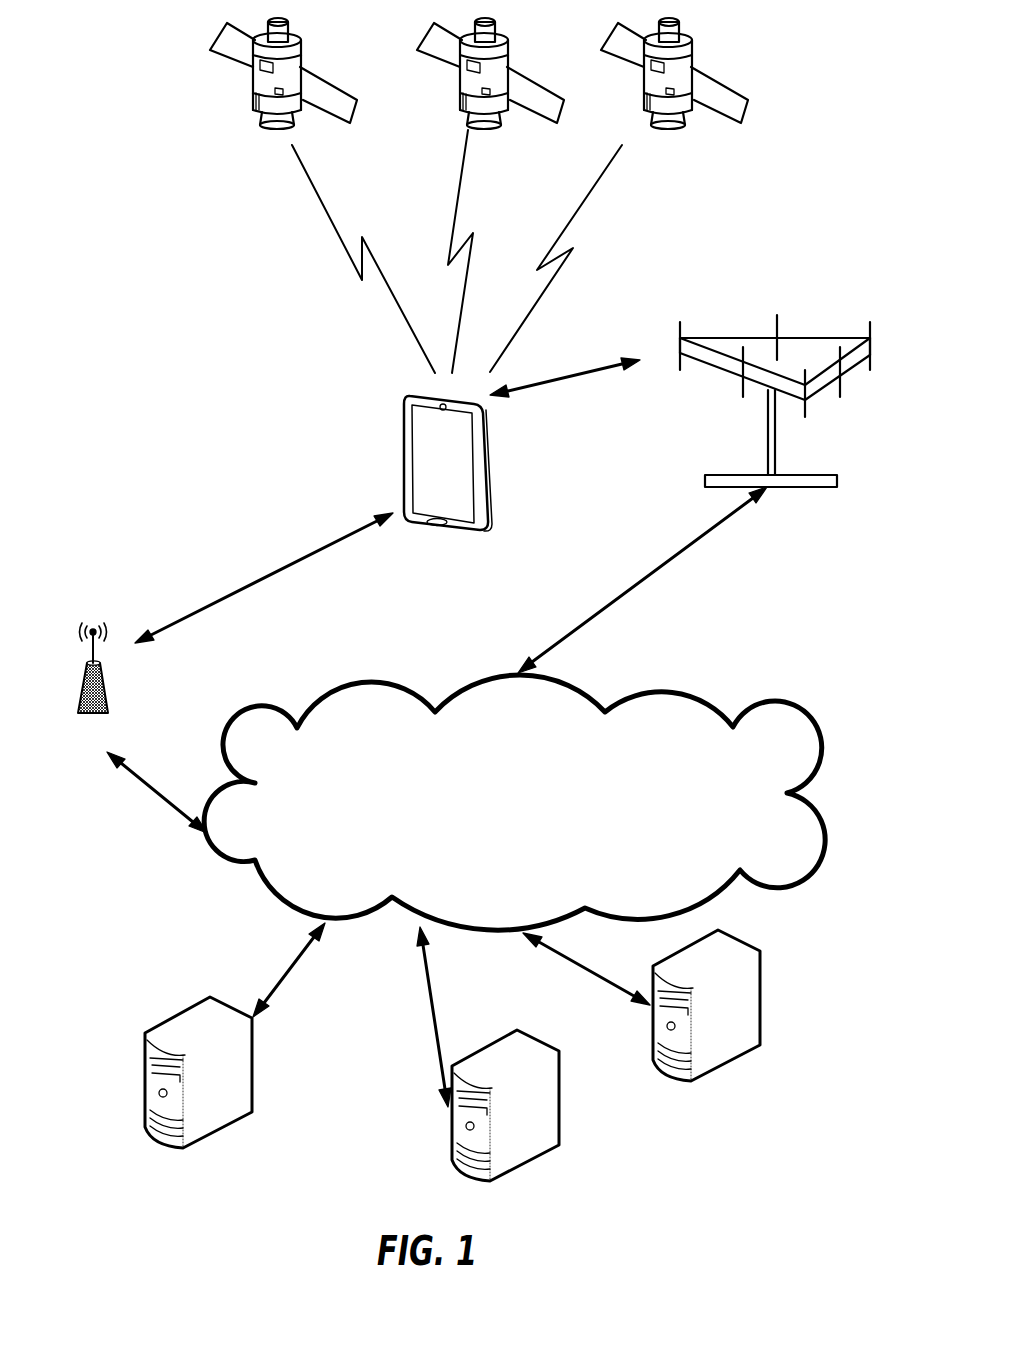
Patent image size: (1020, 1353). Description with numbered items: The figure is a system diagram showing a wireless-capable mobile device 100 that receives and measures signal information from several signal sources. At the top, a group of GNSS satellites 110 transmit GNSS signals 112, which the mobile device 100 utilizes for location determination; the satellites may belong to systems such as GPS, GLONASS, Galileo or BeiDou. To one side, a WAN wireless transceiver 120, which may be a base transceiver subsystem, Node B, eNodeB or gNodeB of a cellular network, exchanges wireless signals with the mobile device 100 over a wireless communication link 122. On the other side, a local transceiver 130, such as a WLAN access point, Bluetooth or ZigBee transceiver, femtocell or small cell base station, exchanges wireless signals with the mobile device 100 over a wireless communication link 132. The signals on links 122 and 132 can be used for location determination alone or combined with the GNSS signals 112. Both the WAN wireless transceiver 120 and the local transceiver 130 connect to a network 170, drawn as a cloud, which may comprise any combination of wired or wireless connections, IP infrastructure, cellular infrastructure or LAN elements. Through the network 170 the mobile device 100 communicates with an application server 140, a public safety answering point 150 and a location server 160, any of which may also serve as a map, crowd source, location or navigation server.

The GNSS satellites 110 is at (398, 67).
The GNSS signals 112 is at (455, 228).
The mobile device 100 is at (489, 484).
The wireless communication link 122 is at (570, 383).
The WAN wireless transceiver 120 is at (805, 488).
The wireless communication link 132 is at (237, 595).
The local transceiver 130 is at (103, 717).
The network 170 is at (787, 873).
The location server 160 is at (252, 1067).
The public safety answering point 150 is at (557, 1100).
The application server 140 is at (758, 998).